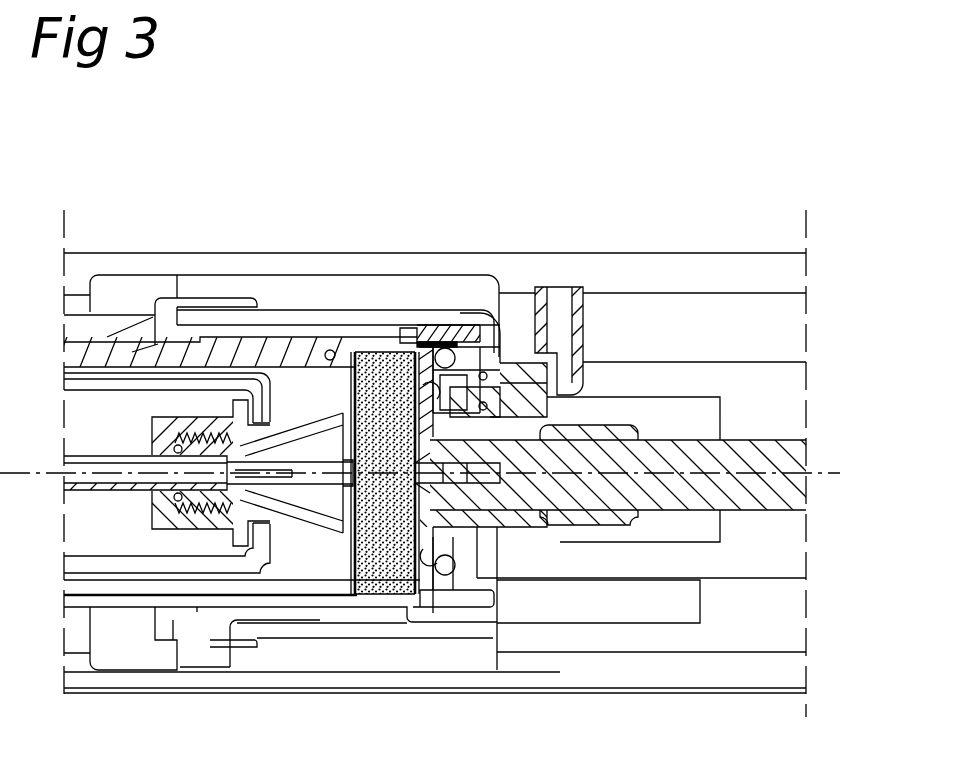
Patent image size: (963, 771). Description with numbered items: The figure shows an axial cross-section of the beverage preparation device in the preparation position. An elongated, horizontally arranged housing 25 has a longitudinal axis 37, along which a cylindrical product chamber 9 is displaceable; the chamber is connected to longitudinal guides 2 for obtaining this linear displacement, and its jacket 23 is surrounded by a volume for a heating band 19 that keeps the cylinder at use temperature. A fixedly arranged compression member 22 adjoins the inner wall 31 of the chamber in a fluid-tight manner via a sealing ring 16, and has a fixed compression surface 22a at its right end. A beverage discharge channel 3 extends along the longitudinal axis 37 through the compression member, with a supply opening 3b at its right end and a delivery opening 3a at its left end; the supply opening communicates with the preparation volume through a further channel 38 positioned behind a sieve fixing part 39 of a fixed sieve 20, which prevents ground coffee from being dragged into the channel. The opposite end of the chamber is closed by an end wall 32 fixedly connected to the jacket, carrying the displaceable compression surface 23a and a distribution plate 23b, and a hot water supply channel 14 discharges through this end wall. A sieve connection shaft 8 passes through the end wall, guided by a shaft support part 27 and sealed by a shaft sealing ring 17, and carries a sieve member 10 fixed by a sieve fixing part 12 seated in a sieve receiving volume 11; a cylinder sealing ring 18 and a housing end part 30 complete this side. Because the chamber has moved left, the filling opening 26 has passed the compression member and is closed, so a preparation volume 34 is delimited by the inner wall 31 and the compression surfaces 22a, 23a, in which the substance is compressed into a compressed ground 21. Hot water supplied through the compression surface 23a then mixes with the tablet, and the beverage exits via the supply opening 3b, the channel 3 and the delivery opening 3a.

The longitudinal guides 2 is at (773, 313).
The beverage discharge channel 3 is at (133, 462).
The delivery opening 3a is at (64, 457).
The supply opening 3b is at (227, 468).
The sieve connection shaft 8 is at (788, 460).
The product chamber 9 is at (390, 353).
The sieve member 10 is at (440, 597).
The sieve receiving volume 11 is at (580, 510).
The sieve fixing part 12 is at (535, 513).
The hot water supply channel 14 is at (563, 307).
The sealing ring 16 is at (328, 352).
The shaft sealing ring 17 is at (505, 548).
The cylinder sealing ring 18 is at (435, 520).
The volume for heating band 19 is at (208, 328).
The fixed sieve 20 is at (352, 552).
The compressed ground 21 is at (340, 548).
The fixed compression member 22 is at (142, 611).
The fixed compression surface 22a is at (358, 357).
The jacket 23 is at (470, 392).
The displaceable compression surface 23a is at (400, 598).
The distribution plate 23b is at (443, 327).
The housing 25 is at (750, 248).
The filling opening 26 is at (143, 338).
The shaft support part 27 is at (622, 522).
The housing end part 30 is at (478, 400).
The inner wall 31 is at (376, 592).
The end wall 32 is at (533, 450).
The preparation volume 34 is at (395, 595).
The longitudinal axis 37 is at (807, 474).
The further channel 38 is at (307, 495).
The sieve fixing part 39 is at (302, 455).